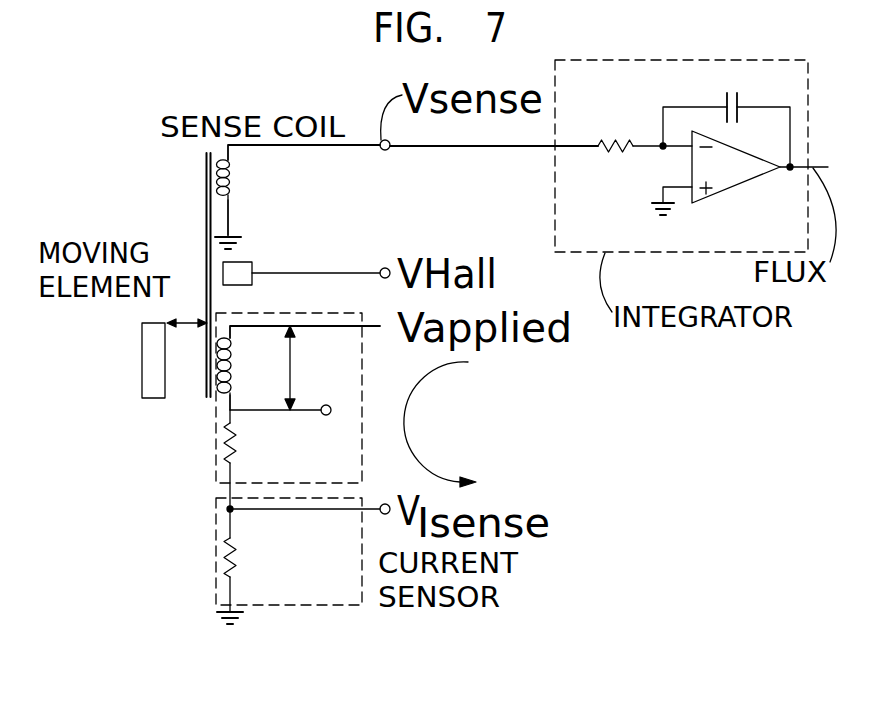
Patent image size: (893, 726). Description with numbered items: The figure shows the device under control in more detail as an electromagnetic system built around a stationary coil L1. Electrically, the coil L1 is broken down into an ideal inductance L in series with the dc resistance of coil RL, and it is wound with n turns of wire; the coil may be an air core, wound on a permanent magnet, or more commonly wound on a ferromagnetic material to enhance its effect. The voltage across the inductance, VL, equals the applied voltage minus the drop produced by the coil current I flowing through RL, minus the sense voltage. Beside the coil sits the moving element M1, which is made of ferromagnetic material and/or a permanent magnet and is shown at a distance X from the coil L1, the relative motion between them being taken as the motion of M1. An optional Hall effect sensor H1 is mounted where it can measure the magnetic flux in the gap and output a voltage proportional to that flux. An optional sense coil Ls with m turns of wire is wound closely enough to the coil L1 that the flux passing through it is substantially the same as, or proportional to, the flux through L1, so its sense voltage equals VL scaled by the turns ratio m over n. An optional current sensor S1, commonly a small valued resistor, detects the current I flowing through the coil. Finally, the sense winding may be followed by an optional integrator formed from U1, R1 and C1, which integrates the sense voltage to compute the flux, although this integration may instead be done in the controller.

The sense coil Ls is at (250, 166).
The turns of wire of the sense coil m is at (248, 210).
The Hall effect sensor H1 is at (238, 260).
The moving element M1 is at (142, 378).
The motion of the moving element X is at (185, 318).
The coil L1 is at (313, 411).
The ideal inductance L is at (236, 352).
The turns of wire of the coil n is at (243, 386).
The coil voltage VL is at (291, 362).
The dc resistance of coil RL is at (233, 440).
The coil current I is at (440, 424).
The current sensor S1 is at (290, 607).
The integrator resistor R1 is at (627, 142).
The integrator capacitor C1 is at (730, 93).
The integrator amplifier U1 is at (713, 195).